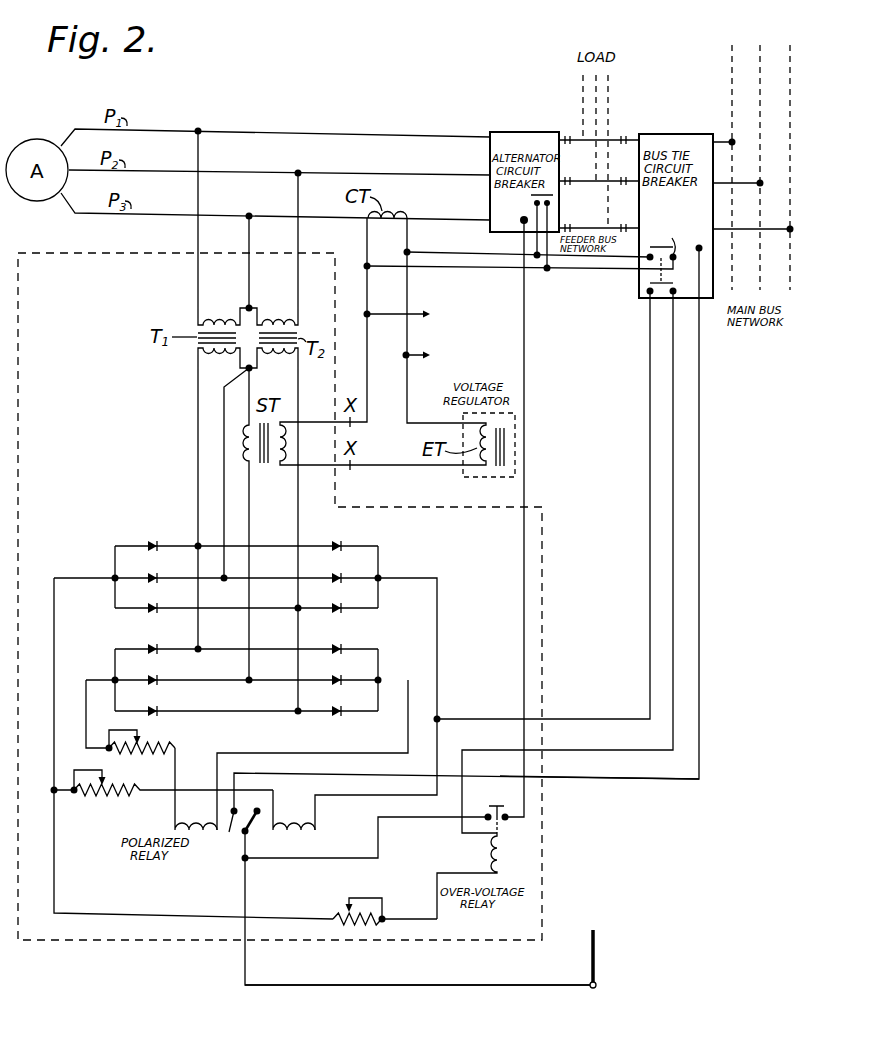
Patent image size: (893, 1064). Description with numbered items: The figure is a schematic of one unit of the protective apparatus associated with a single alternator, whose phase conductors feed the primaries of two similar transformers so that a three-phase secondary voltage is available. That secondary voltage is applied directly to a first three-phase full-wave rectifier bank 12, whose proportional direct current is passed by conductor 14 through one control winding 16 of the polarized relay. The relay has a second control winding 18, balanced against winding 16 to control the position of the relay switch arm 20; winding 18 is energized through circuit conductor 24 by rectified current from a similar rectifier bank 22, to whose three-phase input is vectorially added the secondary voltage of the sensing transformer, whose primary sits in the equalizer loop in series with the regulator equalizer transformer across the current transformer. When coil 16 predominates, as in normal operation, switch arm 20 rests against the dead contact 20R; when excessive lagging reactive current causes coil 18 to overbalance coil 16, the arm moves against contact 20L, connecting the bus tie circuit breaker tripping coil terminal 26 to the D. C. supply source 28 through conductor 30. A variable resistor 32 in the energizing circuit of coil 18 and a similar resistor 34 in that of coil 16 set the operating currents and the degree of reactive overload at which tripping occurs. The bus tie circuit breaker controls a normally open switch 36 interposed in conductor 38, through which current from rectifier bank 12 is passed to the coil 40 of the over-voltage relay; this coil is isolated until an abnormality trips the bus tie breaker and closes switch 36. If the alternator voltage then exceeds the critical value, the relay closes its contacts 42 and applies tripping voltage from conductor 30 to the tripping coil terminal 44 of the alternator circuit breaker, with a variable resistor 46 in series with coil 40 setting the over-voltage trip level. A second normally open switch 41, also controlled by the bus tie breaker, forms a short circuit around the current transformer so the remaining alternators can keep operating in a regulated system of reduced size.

The three-phase full-wave rectifier bank 12 is at (112, 546).
The conductor 14 is at (54, 677).
The control winding 16 is at (317, 832).
The second control winding 18 is at (174, 830).
The relay switch arm 20 is at (249, 833).
The contact 20L is at (224, 834).
The dead contact 20R is at (257, 811).
The three-phase full-wave rectifier bank 22 is at (113, 658).
The circuit conductor 24 is at (86, 716).
The bus tie circuit breaker tripping coil terminal 26 is at (699, 246).
The D. C. supply source 28 is at (598, 977).
The conductor 30 is at (446, 986).
The variable resistor 32 is at (142, 745).
The variable resistor 34 is at (107, 797).
The switch 36 is at (648, 291).
The conductor 38 is at (673, 478).
The over-voltage relay coil 40 is at (505, 856).
The second normally open switch 41 is at (663, 250).
The contacts 42 is at (508, 812).
The tripping coil terminal 44 is at (522, 221).
The variable resistor 46 is at (352, 909).